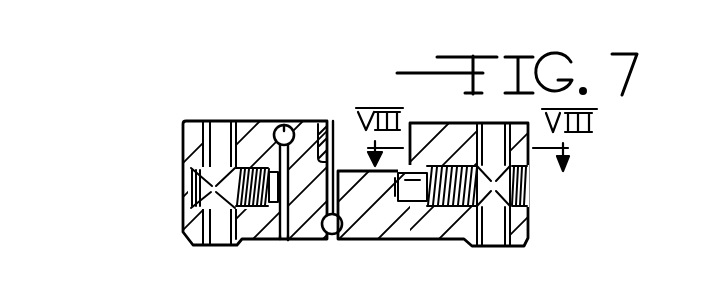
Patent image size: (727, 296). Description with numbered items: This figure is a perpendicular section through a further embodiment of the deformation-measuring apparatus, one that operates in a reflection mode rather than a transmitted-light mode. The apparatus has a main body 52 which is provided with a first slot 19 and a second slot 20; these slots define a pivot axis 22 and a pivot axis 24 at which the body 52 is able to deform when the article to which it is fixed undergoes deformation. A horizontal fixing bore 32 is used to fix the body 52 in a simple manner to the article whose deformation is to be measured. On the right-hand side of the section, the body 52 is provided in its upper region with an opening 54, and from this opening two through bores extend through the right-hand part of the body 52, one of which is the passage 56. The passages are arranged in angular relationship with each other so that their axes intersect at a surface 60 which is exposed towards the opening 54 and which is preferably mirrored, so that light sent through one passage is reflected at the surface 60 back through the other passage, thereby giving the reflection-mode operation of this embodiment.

The first slot 19 is at (284, 240).
The second slot 20 is at (340, 203).
The pivot axis 22 is at (289, 125).
The pivot axis 24 is at (332, 234).
The horizontal fixing bore 32 is at (197, 185).
The main body 52 is at (253, 140).
The opening 54 is at (408, 120).
The passage 56 is at (515, 231).
The surface 60 is at (334, 120).